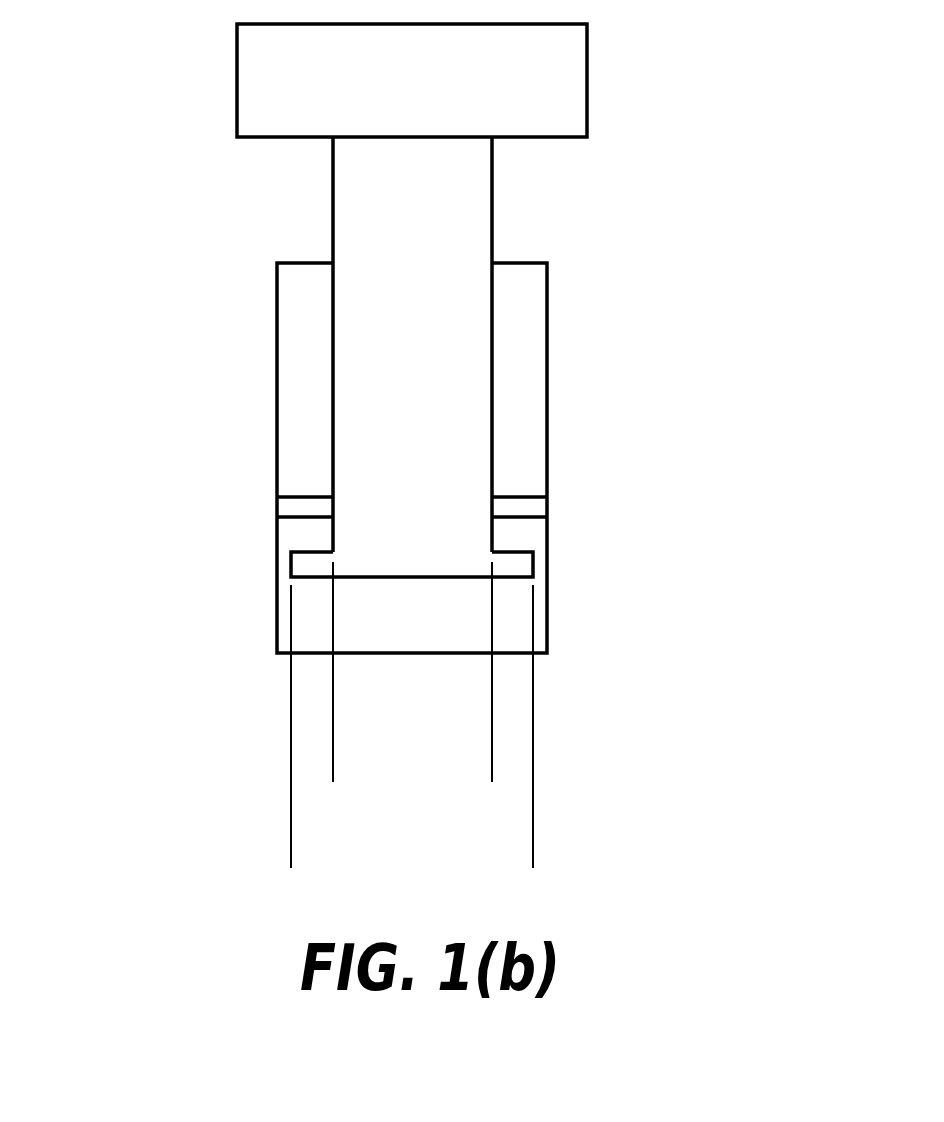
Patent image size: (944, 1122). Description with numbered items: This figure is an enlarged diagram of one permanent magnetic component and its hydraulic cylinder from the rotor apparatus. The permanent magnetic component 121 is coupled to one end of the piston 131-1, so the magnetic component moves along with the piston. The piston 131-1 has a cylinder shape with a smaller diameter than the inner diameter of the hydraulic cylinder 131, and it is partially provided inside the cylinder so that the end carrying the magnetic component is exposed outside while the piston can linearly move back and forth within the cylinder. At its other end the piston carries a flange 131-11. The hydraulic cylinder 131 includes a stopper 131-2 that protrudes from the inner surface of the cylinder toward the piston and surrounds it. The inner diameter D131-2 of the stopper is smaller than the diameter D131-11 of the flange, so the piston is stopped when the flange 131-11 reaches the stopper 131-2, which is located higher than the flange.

The permanent magnetic component 121 is at (237, 85).
The hydraulic cylinder 131 is at (547, 570).
The piston 131-1 is at (492, 288).
The stopper 131-2 is at (295, 495).
The flange 131-11 is at (510, 577).
The inner diameter of stopper D131-2 is at (492, 765).
The diameter of flange D131-11 is at (533, 852).